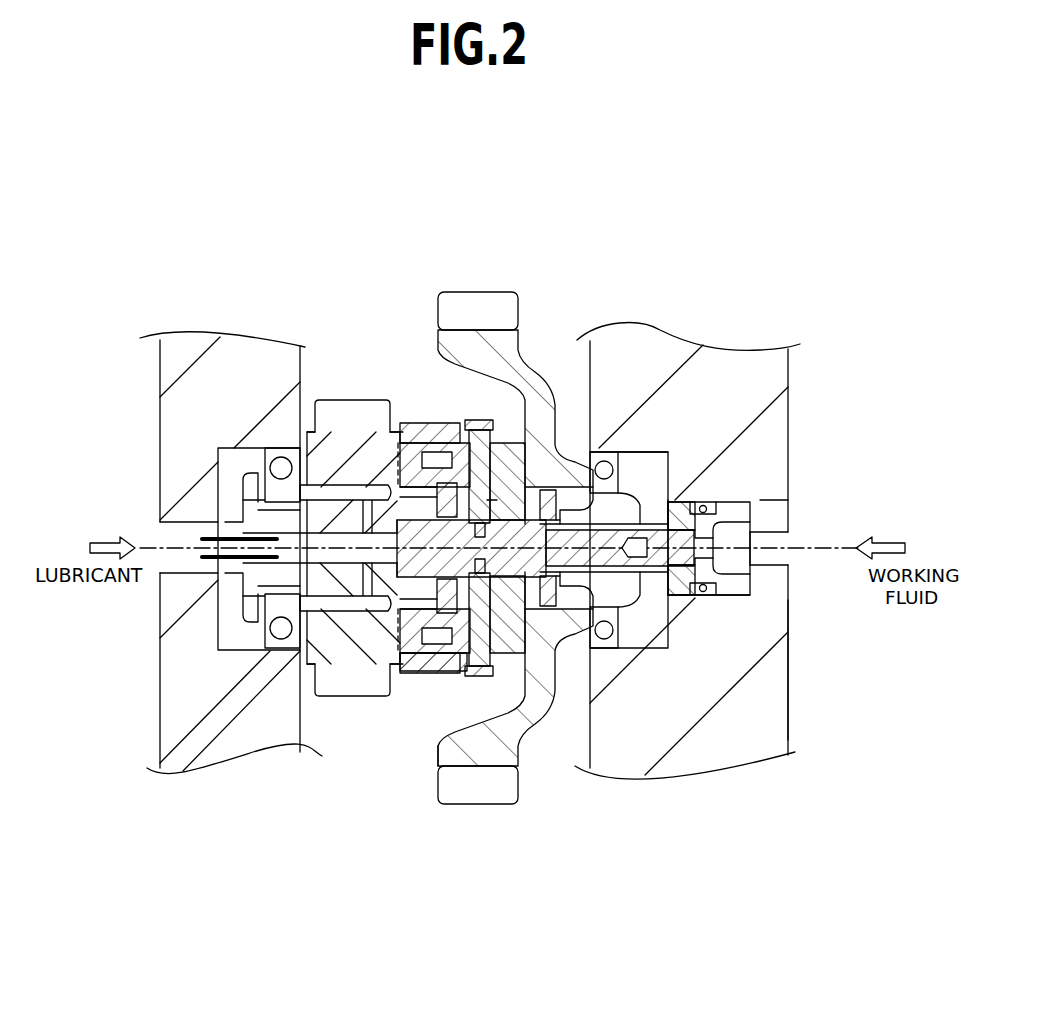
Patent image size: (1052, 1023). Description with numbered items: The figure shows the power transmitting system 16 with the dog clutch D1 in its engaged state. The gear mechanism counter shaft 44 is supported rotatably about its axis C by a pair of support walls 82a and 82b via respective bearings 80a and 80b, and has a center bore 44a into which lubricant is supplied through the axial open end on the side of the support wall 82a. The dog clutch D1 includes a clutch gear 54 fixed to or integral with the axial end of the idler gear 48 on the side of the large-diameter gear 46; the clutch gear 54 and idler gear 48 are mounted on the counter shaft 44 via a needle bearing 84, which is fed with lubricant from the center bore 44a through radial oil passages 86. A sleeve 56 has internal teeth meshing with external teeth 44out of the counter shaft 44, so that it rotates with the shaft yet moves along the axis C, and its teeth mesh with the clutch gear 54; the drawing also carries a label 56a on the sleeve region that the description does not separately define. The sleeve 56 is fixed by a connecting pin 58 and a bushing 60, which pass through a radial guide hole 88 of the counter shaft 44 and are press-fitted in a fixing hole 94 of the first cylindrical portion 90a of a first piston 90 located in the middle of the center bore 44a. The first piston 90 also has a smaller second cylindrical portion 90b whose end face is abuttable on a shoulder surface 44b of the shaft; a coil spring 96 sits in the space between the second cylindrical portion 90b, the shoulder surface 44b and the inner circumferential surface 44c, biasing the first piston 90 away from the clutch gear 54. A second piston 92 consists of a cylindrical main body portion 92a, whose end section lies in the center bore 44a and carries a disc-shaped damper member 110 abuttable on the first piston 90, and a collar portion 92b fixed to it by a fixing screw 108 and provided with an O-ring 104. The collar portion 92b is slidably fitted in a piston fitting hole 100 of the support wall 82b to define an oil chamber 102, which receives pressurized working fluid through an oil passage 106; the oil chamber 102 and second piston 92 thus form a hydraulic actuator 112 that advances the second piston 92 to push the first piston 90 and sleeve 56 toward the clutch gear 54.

The power transmitting system 16 is at (602, 150).
The dog clutch D1 is at (367, 240).
The axis C is at (820, 548).
The gear mechanism counter shaft 44 is at (240, 566).
The center bore 44a is at (762, 733).
The shoulder surface 44b is at (354, 532).
The inner circumferential surface 44c is at (400, 520).
The external teeth 44out is at (490, 600).
The large-diameter gear 46 is at (480, 793).
The idler gear 48 is at (330, 410).
The clutch gear 54 is at (410, 433).
The sleeve 56 is at (428, 423).
The bolt 56a is at (480, 422).
The connecting pin 58 is at (500, 400).
The bushing 60 is at (437, 437).
The bearing 80a is at (268, 450).
The bearing 80b is at (612, 650).
The support wall 82a is at (173, 337).
The support wall 82b is at (766, 742).
The needle bearing 84 is at (222, 685).
The radial oil passages 86 is at (338, 727).
The guide hole 88 is at (568, 525).
The first piston 90 is at (548, 655).
The first cylindrical portion 90a is at (506, 597).
The second cylindrical portion 90b is at (458, 653).
The second piston 92 is at (648, 514).
The main body portion 92a is at (590, 448).
The collar portion 92b is at (677, 497).
The fixing hole 94 is at (490, 503).
The coil spring 96 is at (376, 556).
The piston fitting hole 100 is at (650, 577).
The oil chamber 102 is at (756, 582).
The O-ring 104 is at (706, 502).
The oil passage 106 is at (736, 517).
The fixing screw 108 is at (755, 558).
The damper member 110 is at (560, 660).
The hydraulic actuator 112 is at (790, 523).